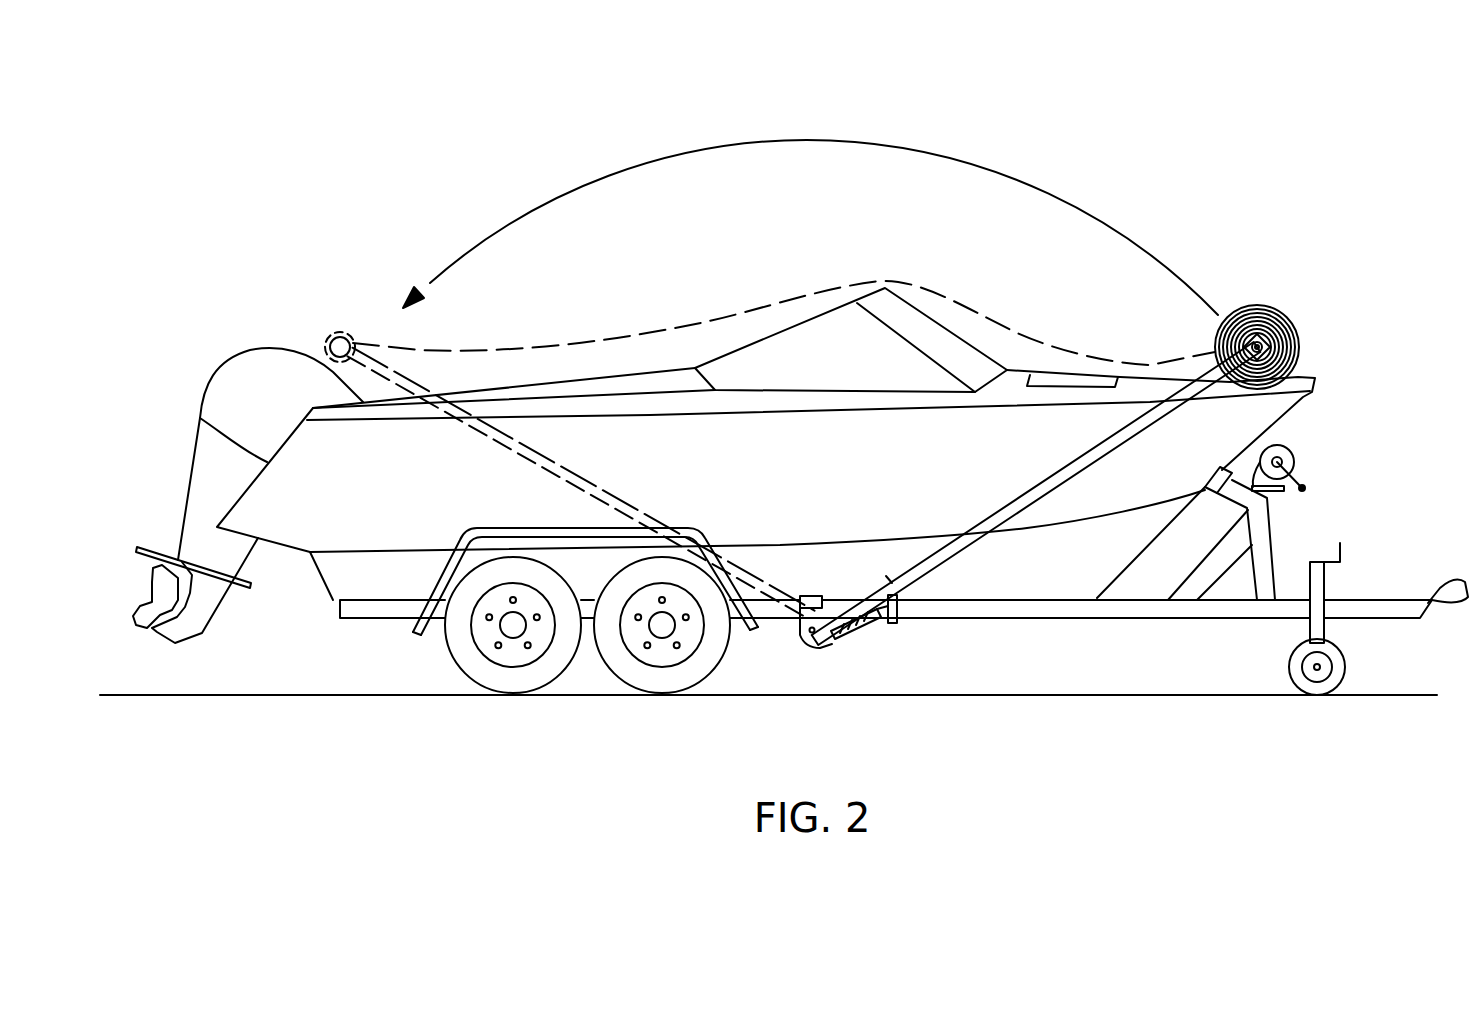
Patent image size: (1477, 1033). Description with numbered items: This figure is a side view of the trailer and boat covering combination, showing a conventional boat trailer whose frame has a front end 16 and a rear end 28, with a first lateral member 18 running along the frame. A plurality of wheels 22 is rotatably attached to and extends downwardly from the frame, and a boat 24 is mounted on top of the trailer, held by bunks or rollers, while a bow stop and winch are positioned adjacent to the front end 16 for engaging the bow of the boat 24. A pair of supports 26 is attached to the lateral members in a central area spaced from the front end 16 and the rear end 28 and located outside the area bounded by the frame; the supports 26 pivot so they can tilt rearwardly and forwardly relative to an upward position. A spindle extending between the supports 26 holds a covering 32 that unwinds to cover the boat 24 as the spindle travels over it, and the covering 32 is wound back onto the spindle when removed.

The front end 16 is at (1434, 633).
The first lateral member 18 is at (383, 608).
The wheels 22 is at (520, 680).
The boat 24 is at (1237, 415).
The supports 26 is at (940, 545).
The rear end 28 is at (298, 602).
The covering 32 is at (732, 313).